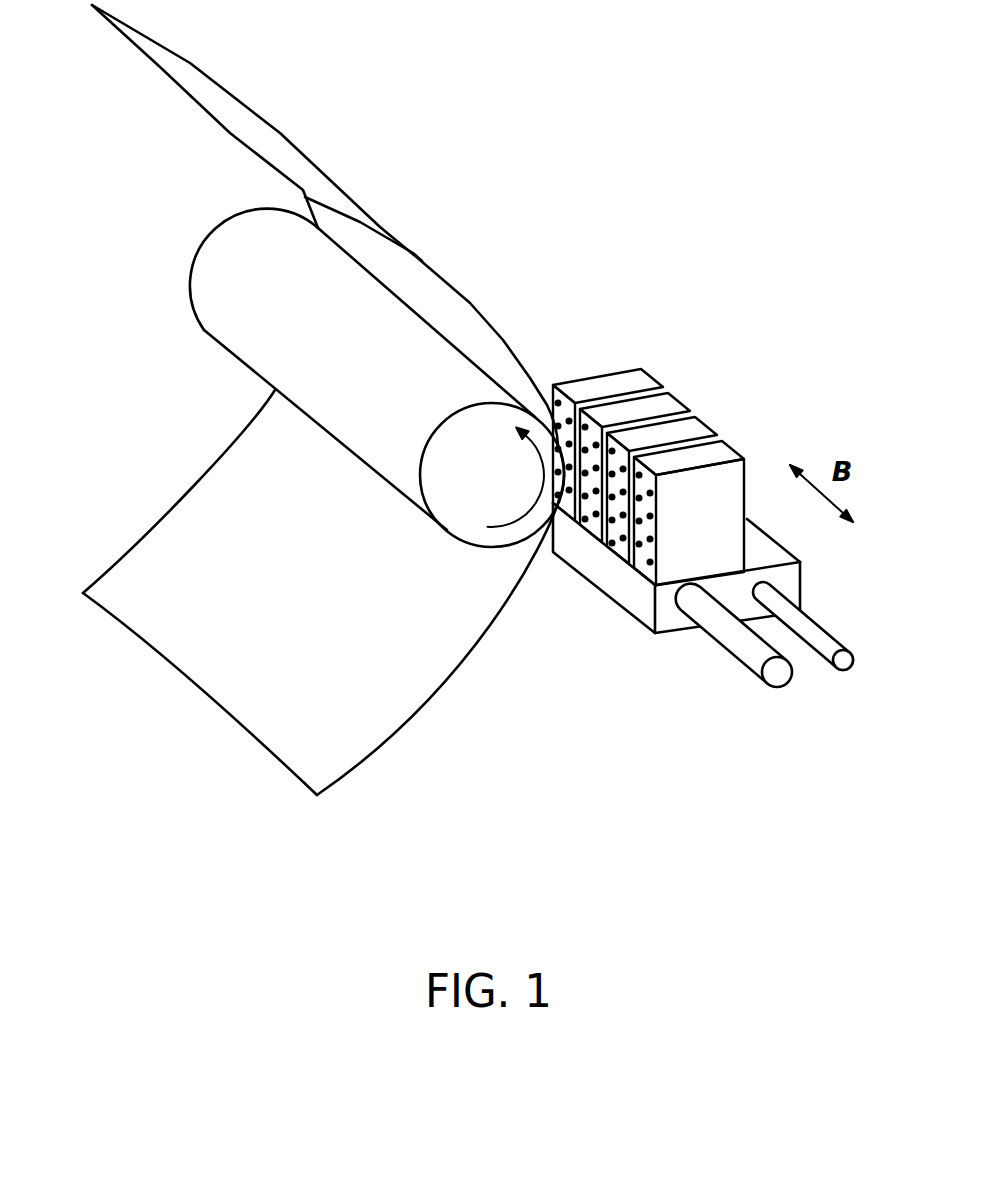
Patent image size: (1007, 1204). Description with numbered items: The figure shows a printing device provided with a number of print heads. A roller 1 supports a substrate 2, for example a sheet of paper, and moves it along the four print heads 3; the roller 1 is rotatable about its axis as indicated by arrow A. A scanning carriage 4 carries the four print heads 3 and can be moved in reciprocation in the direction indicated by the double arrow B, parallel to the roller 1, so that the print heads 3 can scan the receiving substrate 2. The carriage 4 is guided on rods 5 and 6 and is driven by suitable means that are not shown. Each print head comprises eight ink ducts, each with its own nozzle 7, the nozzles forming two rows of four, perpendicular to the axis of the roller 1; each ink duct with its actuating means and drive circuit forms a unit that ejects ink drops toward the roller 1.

The roller 1 is at (225, 349).
The substrate 2 is at (228, 105).
The print heads 3 is at (642, 378).
The scanning carriage 4 is at (642, 613).
The rod 5 is at (723, 650).
The rod 6 is at (815, 623).
The nozzle 7 is at (652, 532).